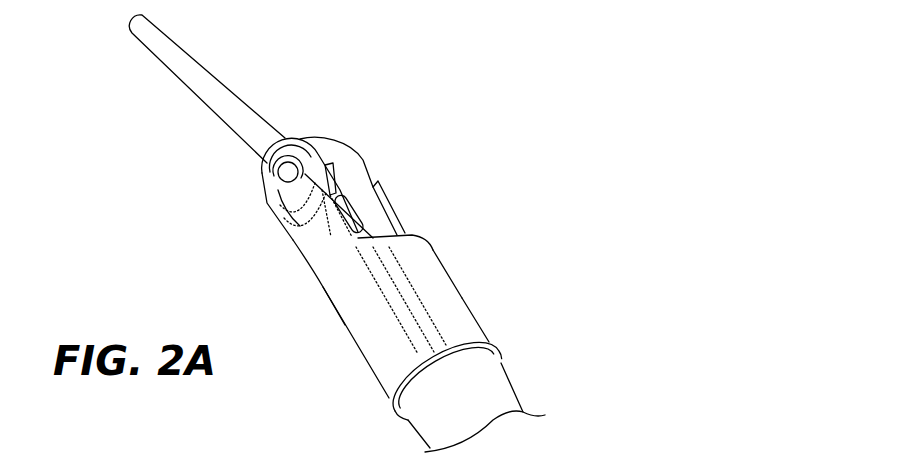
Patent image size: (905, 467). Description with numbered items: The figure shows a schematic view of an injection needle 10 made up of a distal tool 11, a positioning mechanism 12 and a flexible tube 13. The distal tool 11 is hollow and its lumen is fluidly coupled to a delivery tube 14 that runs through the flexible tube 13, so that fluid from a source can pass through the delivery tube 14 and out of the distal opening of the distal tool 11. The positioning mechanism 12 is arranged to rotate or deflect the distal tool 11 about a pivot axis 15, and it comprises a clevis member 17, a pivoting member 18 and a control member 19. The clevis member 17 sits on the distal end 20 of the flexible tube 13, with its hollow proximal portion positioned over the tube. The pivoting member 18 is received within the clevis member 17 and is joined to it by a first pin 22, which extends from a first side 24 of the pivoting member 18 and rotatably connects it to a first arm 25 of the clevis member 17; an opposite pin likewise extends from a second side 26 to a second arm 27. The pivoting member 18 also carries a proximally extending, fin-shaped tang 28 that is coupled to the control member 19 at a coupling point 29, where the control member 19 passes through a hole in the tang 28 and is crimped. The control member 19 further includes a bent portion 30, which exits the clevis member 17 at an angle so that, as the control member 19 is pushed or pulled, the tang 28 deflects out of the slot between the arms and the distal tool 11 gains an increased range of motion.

The injection needle 10 is at (74, 166).
The distal tool 11 is at (196, 52).
The positioning mechanism 12 is at (481, 248).
The flexible tube 13 is at (527, 400).
The delivery tube 14 is at (359, 236).
The pivot axis 15 is at (276, 187).
The clevis member 17 is at (336, 326).
The pivoting member 18 is at (336, 145).
The control member 19 is at (406, 340).
The distal end 20 is at (525, 369).
The first pin 22 is at (284, 156).
The first side 24 is at (290, 243).
The first arm 25 is at (307, 258).
The second side 26 is at (414, 218).
The second arm 27 is at (363, 218).
The tang 28 is at (318, 270).
The coupling point 29 is at (337, 234).
The bent portion 30 is at (345, 262).